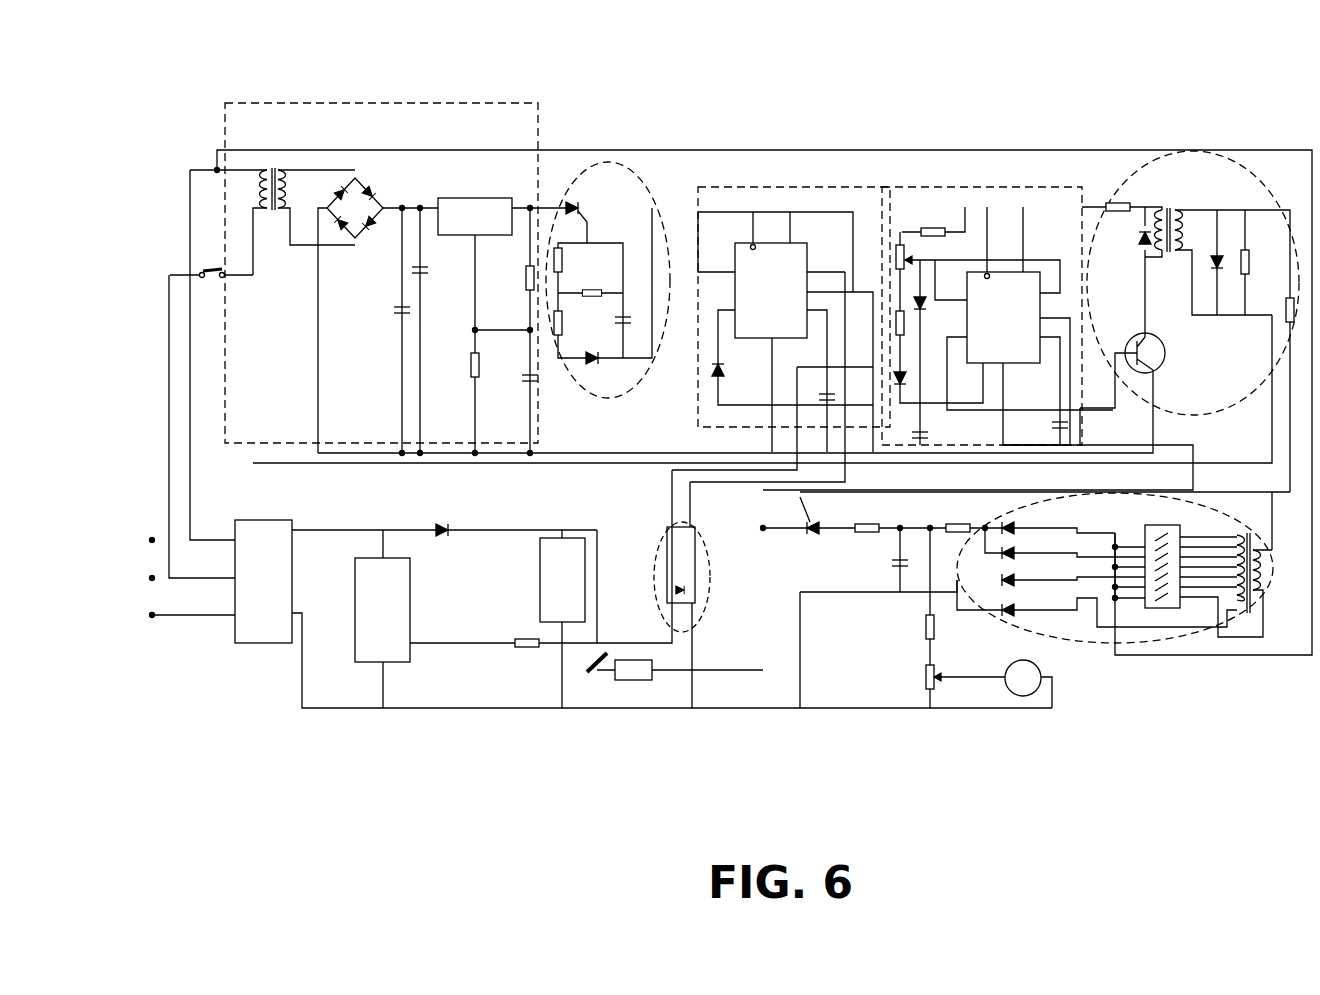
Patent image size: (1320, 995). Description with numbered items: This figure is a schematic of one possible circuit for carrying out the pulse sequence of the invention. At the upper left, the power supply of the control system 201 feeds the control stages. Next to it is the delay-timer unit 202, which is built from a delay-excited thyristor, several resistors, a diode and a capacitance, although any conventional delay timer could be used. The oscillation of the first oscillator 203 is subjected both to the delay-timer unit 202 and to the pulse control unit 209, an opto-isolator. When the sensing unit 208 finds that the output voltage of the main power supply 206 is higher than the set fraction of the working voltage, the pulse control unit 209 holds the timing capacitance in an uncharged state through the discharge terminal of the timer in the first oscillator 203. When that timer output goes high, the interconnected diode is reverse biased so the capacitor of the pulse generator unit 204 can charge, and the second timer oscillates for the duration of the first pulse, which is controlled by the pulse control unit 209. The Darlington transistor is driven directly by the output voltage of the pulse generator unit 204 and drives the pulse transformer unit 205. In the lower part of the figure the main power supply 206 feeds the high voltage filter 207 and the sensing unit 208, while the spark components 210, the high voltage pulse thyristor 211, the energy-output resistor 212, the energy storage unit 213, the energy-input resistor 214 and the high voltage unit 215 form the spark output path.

The power supply of the control system 201 is at (413, 123).
The delay-timer unit 202 is at (617, 182).
The first oscillator 203 is at (834, 168).
The pulse generator unit 204 is at (1036, 168).
The pulse transformer unit 205 is at (1205, 168).
The main power supply 206 is at (258, 568).
The high voltage filter 207 is at (550, 550).
The sensing unit 208 is at (382, 615).
The pulse control unit 209 is at (693, 583).
The spark components 210 is at (638, 672).
The high voltage pulse thyristor 211 is at (800, 533).
The energy-output resistor 212 is at (863, 533).
The energy storage unit 213 is at (907, 570).
The energy-input resistor 214 is at (970, 525).
The high voltage unit 215 is at (1167, 597).